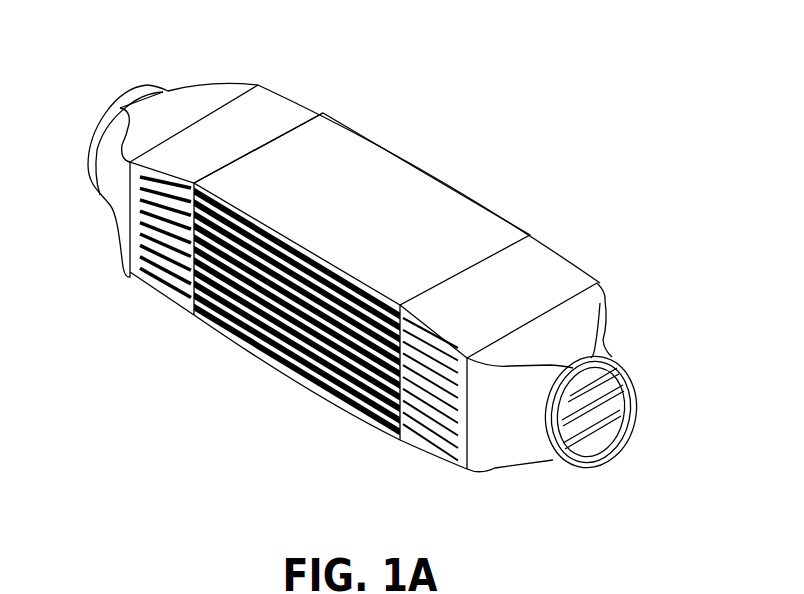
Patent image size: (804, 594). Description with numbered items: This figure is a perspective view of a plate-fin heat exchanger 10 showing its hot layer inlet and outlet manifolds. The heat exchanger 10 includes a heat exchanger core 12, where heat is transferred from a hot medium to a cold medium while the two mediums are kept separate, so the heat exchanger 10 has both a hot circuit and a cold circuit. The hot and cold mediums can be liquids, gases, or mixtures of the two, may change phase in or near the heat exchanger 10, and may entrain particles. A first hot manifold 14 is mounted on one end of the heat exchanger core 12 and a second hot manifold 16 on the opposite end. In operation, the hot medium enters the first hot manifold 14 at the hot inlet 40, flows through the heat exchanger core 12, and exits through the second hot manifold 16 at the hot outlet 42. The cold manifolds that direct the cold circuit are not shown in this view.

The heat exchanger 10 is at (437, 73).
The heat exchanger core 12 is at (472, 207).
The first hot manifold 14 is at (567, 273).
The second hot manifold 16 is at (285, 103).
The hot inlet 40 is at (632, 442).
The hot outlet 42 is at (88, 118).